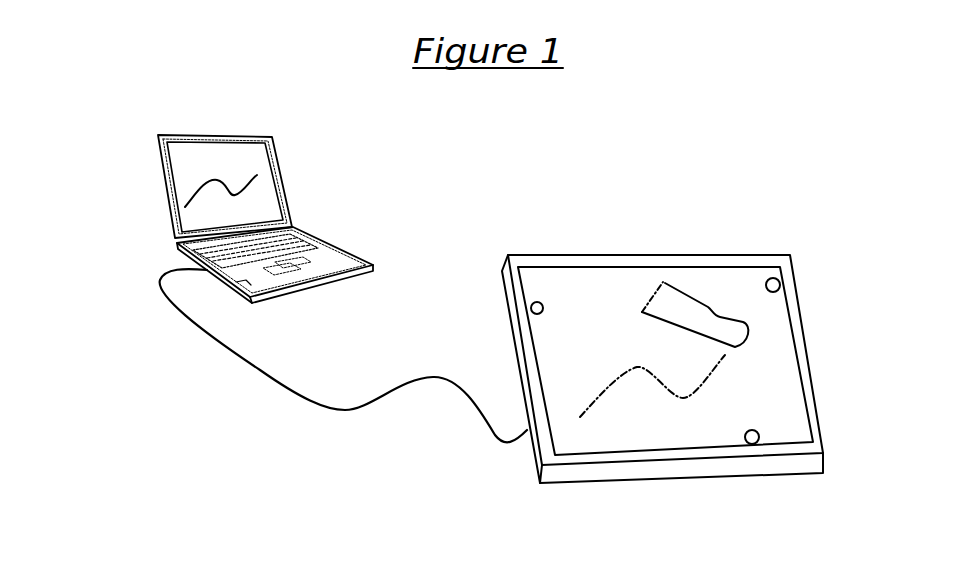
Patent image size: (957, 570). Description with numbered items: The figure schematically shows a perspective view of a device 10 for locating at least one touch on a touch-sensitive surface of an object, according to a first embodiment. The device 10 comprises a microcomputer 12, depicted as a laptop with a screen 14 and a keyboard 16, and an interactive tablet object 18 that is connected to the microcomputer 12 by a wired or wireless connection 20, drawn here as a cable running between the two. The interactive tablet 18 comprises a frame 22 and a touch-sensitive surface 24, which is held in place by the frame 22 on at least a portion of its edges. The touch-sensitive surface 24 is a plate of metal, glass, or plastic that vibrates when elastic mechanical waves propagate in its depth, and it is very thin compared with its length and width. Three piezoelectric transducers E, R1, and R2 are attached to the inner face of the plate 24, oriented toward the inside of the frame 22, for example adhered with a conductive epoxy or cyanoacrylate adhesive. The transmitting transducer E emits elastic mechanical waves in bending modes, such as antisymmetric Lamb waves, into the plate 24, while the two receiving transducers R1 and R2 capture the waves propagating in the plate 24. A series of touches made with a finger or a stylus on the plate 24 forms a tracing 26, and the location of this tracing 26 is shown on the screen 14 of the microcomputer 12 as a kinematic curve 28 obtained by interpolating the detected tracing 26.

The device for locating at least one touch 10 is at (118, 418).
The microcomputer 12 is at (298, 192).
The screen 14 is at (203, 158).
The keyboard 16 is at (282, 245).
The interactive tablet object 18 is at (633, 237).
The wired or wireless connection 20 is at (310, 397).
The frame 22 is at (817, 373).
The touch-sensitive surface 24 is at (617, 433).
The tracing 26 is at (635, 367).
The kinematic curve 28 is at (193, 194).
The transmitting transducer E is at (532, 308).
The receiving transducer R1 is at (754, 444).
The receiving transducer R2 is at (779, 285).